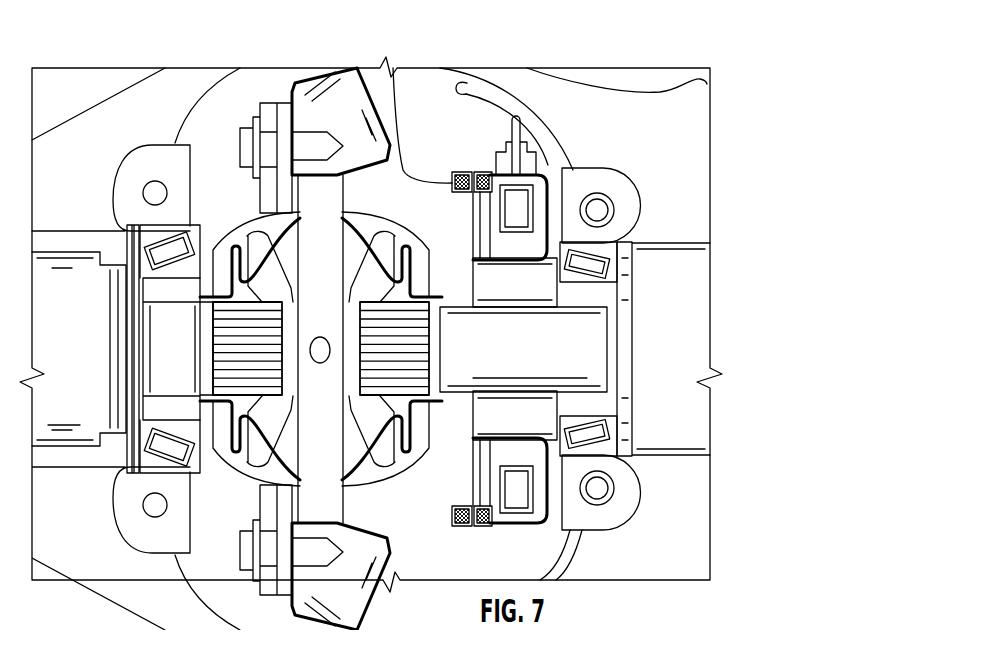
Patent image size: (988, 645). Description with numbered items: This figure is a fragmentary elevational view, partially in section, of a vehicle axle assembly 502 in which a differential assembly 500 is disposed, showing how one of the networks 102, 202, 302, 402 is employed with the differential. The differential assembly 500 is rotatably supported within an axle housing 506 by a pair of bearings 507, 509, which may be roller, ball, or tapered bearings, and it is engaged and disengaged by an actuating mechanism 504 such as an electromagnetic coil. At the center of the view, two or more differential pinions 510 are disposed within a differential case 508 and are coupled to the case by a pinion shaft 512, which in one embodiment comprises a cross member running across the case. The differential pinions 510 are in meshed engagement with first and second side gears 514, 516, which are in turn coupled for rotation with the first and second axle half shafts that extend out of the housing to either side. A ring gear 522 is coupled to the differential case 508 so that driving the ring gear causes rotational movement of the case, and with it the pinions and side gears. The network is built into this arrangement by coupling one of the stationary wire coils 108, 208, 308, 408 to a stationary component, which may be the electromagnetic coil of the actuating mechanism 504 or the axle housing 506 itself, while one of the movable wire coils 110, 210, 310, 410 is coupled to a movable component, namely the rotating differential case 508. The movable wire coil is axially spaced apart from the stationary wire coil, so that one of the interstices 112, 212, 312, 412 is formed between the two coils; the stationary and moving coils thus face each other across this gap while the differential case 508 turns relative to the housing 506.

The differential assembly 500 is at (447, 129).
The axle assembly 502 is at (632, 103).
The actuating mechanism 504 is at (520, 490).
The axle housing 506 is at (692, 113).
The bearing 507 is at (150, 243).
The differential case 508 is at (385, 92).
The bearing 509 is at (608, 450).
The differential pinions 510 is at (258, 250).
The pinion shaft 512 is at (317, 507).
The first side gear 514 is at (192, 227).
The second side gear 516 is at (386, 432).
The ring gear 522 is at (322, 92).
The network 102 is at (577, 90).
The network 202 is at (577, 90).
The network 302 is at (577, 90).
The network 402 is at (477, 145).
The stationary wire coil 108 is at (689, 205).
The stationary wire coil 208 is at (689, 205).
The stationary wire coil 308 is at (689, 205).
The stationary wire coil 408 is at (490, 185).
The movable wire coil 110 is at (670, 271).
The movable wire coil 210 is at (670, 271).
The movable wire coil 310 is at (670, 271).
The movable wire coil 410 is at (440, 188).
The interstice 112 is at (678, 221).
The interstice 212 is at (678, 221).
The interstice 312 is at (678, 221).
The interstice 412 is at (483, 190).